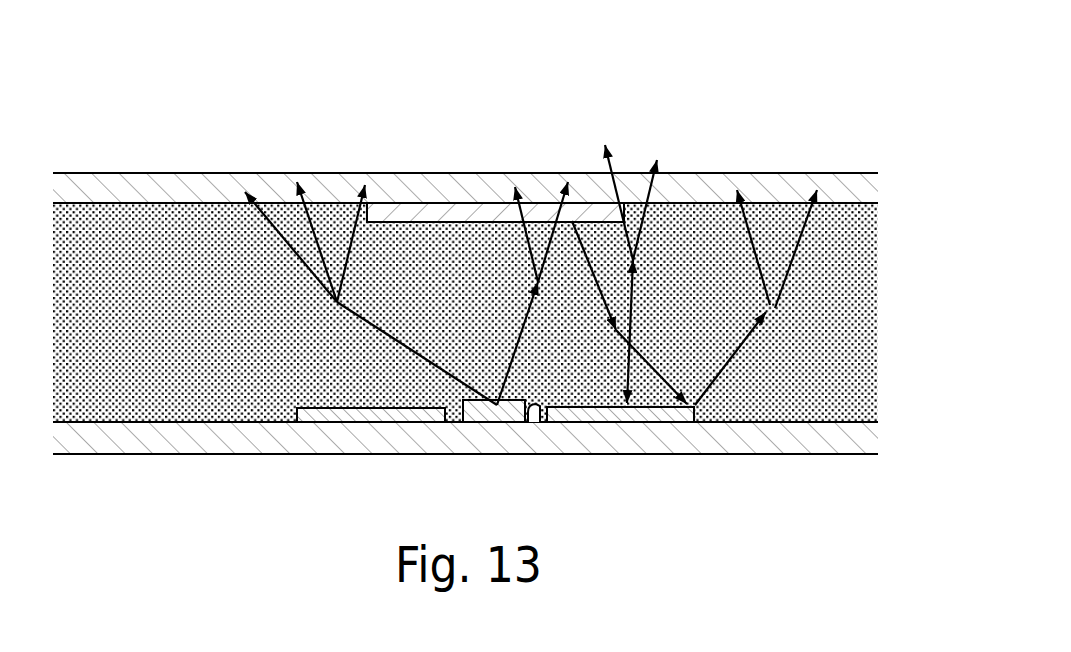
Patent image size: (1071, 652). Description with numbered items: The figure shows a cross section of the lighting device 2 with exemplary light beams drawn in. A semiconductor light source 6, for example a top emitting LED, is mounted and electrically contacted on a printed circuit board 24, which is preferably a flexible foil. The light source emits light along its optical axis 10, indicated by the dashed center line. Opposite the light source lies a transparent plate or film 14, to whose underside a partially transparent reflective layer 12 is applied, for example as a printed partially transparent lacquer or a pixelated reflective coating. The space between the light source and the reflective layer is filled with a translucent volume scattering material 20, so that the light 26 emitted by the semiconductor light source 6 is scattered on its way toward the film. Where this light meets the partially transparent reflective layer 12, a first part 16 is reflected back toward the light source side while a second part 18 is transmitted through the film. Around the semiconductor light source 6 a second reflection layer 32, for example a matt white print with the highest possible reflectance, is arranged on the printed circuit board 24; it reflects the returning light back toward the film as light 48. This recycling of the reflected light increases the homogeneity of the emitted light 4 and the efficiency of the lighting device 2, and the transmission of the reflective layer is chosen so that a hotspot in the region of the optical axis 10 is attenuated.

The lighting device 2 is at (465, 269).
The emitted light 4 is at (306, 198).
The semiconductor light source 6 is at (538, 408).
The optical axis 10 is at (495, 525).
The partially transparent reflective layer 12 is at (432, 207).
The transparent plate or film 14 is at (177, 195).
The reflected part of the light 16 is at (597, 222).
The transmitted part of the light 18 is at (533, 196).
The translucent volume scattering material 20 is at (180, 313).
The printed circuit board 24 is at (773, 440).
The light emitted by the semiconductor light source 26 is at (437, 367).
The second reflection layer 32 is at (350, 413).
The light reflected by the second reflection layer 48 is at (630, 386).